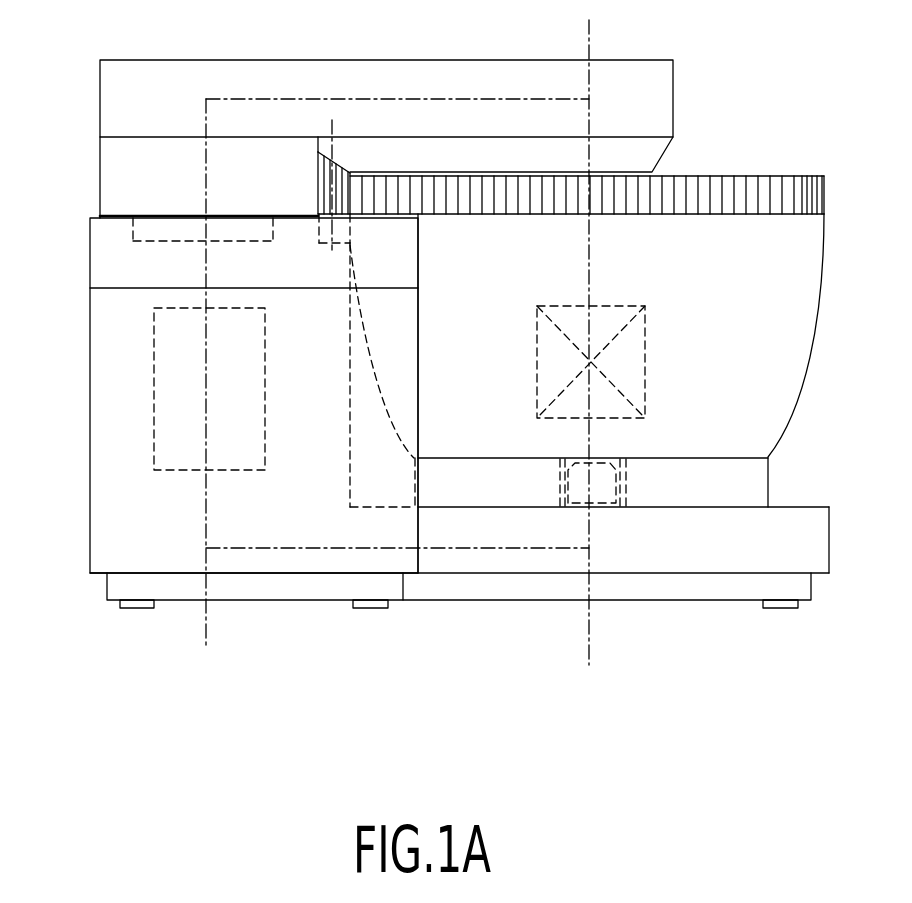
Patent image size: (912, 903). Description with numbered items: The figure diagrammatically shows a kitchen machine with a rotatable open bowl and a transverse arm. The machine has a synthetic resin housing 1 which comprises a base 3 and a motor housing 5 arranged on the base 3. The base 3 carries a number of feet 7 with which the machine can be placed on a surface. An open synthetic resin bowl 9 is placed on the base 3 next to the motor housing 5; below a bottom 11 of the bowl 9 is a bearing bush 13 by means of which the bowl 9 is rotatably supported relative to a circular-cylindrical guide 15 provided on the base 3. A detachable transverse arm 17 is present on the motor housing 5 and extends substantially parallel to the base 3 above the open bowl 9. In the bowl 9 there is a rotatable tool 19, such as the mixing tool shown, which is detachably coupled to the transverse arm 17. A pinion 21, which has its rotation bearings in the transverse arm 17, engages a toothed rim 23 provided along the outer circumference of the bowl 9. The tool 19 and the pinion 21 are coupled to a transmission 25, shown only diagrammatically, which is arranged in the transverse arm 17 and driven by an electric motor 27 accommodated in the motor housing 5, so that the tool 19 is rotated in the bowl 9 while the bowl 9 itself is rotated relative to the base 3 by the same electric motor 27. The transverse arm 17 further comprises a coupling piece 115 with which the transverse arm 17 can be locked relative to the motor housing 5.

The synthetic resin housing 1 is at (78, 547).
The base 3 is at (733, 602).
The motor housing 5 is at (104, 393).
The feet 7 is at (138, 608).
The open synthetic resin bowl 9 is at (790, 382).
The bottom of the bowl 11 is at (718, 457).
The bearing bush 13 is at (627, 490).
The circular-cylindrical guide 15 is at (578, 483).
The transverse arm 17 is at (627, 70).
The rotatable tool 19 is at (641, 364).
The pinion 21 is at (317, 180).
The toothed rim 23 is at (758, 192).
The transmission 25 is at (340, 97).
The electric motor 27 is at (246, 422).
The coupling piece 115 is at (138, 231).